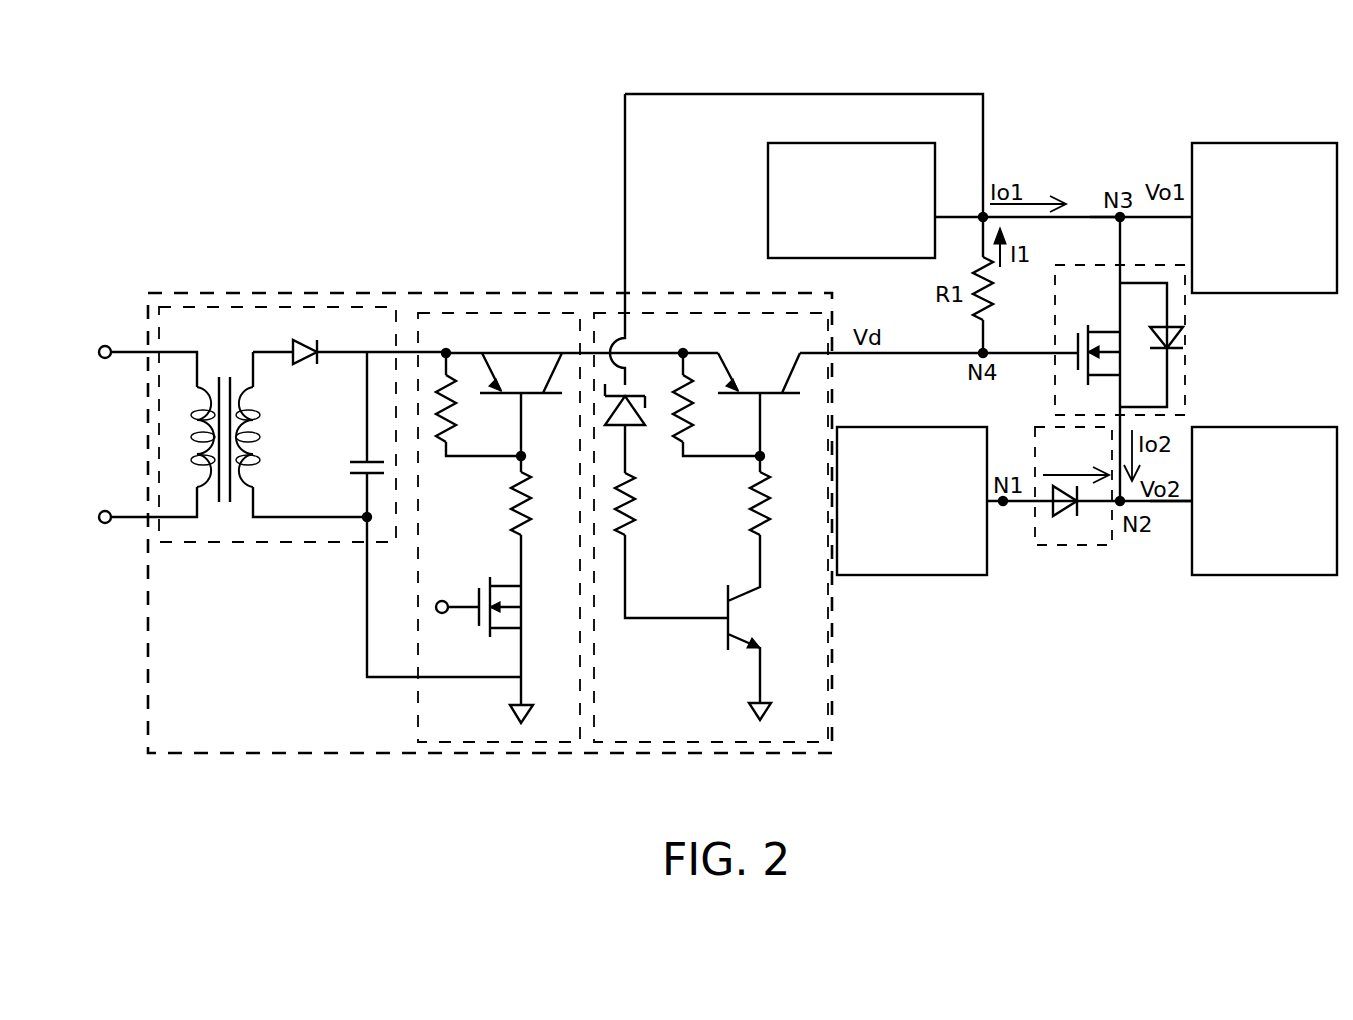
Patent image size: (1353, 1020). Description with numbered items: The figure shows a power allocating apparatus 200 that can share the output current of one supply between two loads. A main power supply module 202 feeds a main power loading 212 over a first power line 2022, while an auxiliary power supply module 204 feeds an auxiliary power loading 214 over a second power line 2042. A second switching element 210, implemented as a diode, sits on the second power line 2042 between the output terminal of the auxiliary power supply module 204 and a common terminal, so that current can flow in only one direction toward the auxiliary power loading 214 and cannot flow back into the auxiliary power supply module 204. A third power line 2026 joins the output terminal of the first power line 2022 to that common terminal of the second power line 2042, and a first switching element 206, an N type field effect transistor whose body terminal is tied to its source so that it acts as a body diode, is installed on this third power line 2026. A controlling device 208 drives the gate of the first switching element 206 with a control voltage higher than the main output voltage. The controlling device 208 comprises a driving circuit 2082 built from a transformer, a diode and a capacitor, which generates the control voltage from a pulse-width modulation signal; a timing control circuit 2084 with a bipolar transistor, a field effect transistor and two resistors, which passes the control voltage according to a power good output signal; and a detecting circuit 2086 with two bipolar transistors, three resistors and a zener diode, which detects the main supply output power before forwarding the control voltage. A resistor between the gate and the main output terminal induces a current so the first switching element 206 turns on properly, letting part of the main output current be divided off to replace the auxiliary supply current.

The power allocating apparatus 200 is at (287, 148).
The main power supply module 202 is at (768, 219).
The auxiliary power supply module 204 is at (913, 578).
The first switching element 206 is at (1187, 380).
The controlling device 208 is at (277, 755).
The second switching element 210 is at (1072, 548).
The main power loading 212 is at (1262, 143).
The auxiliary power loading 214 is at (1262, 578).
The first power line 2022 is at (1090, 215).
The third power line 2026 is at (1120, 242).
The second power line 2042 is at (1172, 505).
The driving circuit 2082 is at (260, 545).
The timing control circuit 2084 is at (482, 745).
The detecting circuit 2086 is at (656, 745).